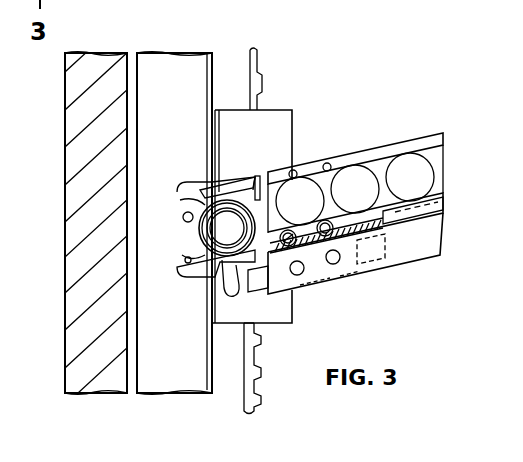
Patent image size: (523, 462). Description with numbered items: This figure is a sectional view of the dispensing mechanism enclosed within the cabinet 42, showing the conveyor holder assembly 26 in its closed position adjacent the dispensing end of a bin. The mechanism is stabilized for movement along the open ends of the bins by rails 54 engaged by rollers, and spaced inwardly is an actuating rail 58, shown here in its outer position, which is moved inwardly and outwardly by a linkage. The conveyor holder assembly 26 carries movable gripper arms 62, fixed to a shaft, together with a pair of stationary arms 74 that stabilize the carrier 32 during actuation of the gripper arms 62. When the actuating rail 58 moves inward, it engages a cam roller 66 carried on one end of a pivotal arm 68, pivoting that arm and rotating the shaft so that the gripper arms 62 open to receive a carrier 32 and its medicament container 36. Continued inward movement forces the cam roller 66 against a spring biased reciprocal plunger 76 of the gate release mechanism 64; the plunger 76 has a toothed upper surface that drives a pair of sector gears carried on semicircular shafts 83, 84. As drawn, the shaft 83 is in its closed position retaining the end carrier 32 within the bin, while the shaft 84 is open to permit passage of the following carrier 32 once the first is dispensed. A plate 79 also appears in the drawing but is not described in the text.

The cabinet 42 is at (85, 62).
The rails 54 is at (160, 62).
The actuating rail 58 is at (275, 118).
The gripper arms 62 is at (258, 182).
The conveyor holder assembly 26 is at (177, 222).
The plate 79 is at (215, 190).
The medicament container 36 is at (200, 231).
The stationary arms 74 is at (205, 282).
The pivotal arm 68 is at (225, 260).
The cam roller 66 is at (228, 295).
The plunger 76 is at (245, 320).
The carrier 32 is at (309, 206).
The shaft 84 is at (357, 273).
The gate release mechanism 64 is at (330, 273).
The shaft 83 is at (312, 280).